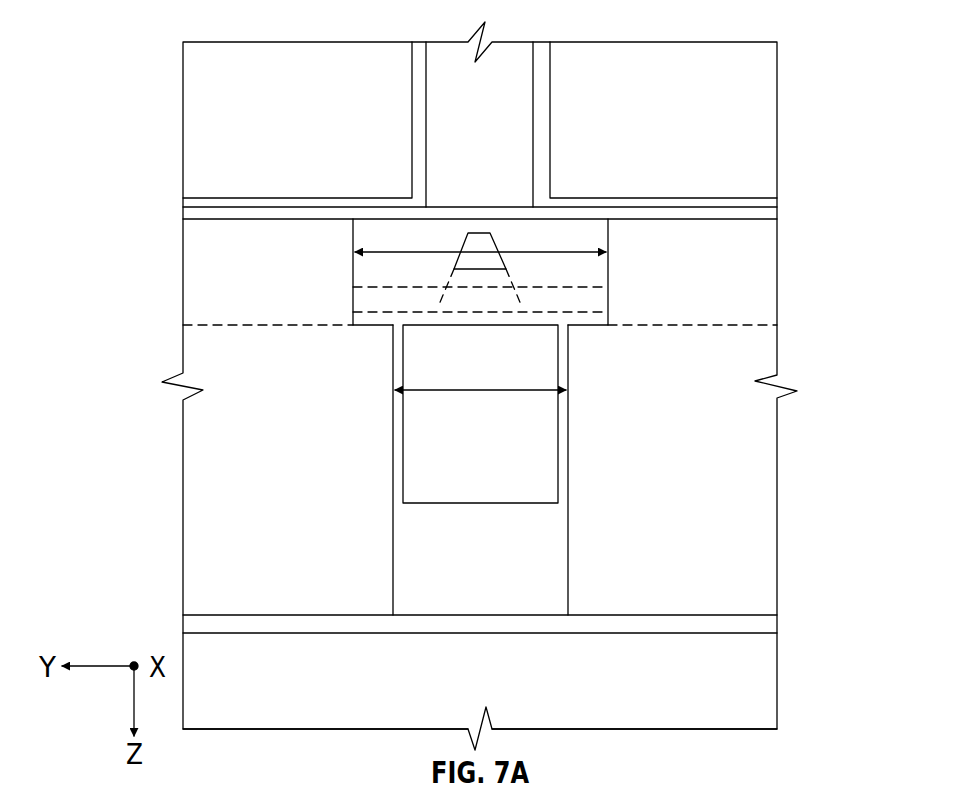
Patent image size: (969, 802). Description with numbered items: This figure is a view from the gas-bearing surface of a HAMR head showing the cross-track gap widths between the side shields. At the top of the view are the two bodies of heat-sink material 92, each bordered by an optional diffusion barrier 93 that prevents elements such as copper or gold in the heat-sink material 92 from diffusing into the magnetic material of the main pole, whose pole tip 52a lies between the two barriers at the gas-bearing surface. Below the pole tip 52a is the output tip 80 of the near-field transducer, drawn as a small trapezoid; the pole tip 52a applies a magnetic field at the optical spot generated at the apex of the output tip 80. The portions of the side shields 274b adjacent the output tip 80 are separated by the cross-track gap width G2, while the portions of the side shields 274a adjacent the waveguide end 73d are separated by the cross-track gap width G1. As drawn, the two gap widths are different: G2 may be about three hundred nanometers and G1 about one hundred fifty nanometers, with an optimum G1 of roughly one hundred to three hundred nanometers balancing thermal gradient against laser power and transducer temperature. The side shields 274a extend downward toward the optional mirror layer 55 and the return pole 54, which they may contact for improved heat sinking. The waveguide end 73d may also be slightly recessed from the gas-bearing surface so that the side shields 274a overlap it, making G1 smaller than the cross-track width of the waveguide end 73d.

The heat-sink material 92 is at (200, 95).
The diffusion barrier 93 is at (418, 52).
The pole tip 52a is at (482, 107).
The output tip 80 is at (487, 245).
The cross-track gap width G2 is at (407, 253).
The side shields 274b is at (233, 290).
The side shields 274a is at (228, 532).
The waveguide end 73d is at (440, 467).
The cross-track gap width G1 is at (490, 388).
The mirror layer 55 is at (757, 625).
The return pole 54 is at (757, 675).